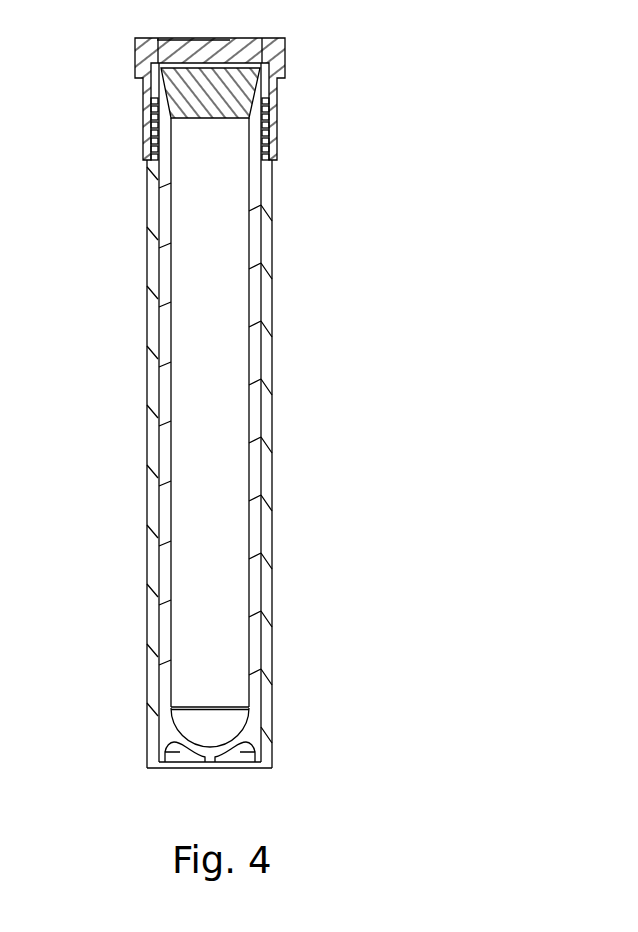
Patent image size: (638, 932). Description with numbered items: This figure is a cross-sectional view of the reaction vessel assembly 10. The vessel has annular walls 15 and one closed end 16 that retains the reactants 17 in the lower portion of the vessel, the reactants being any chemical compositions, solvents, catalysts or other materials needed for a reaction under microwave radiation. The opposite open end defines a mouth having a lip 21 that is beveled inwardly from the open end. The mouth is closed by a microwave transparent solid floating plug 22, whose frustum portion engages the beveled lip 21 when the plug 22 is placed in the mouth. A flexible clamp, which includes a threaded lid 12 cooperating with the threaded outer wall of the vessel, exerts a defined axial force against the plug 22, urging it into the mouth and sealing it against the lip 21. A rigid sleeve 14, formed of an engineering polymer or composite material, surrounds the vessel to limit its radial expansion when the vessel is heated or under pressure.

The vessel assembly 10 is at (408, 337).
The threaded lid 12 is at (282, 54).
The rigid sleeve 14 is at (268, 318).
The annular walls 15 is at (256, 188).
The closed end 16 is at (250, 730).
The reactants 17 is at (220, 720).
The lip 21 is at (162, 116).
The floating plug 22 is at (212, 96).